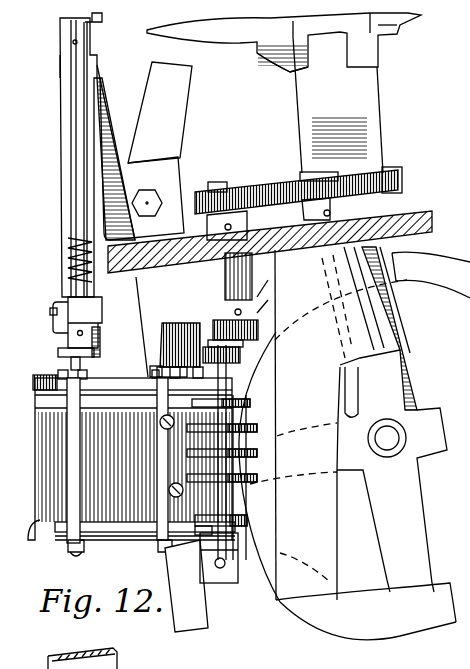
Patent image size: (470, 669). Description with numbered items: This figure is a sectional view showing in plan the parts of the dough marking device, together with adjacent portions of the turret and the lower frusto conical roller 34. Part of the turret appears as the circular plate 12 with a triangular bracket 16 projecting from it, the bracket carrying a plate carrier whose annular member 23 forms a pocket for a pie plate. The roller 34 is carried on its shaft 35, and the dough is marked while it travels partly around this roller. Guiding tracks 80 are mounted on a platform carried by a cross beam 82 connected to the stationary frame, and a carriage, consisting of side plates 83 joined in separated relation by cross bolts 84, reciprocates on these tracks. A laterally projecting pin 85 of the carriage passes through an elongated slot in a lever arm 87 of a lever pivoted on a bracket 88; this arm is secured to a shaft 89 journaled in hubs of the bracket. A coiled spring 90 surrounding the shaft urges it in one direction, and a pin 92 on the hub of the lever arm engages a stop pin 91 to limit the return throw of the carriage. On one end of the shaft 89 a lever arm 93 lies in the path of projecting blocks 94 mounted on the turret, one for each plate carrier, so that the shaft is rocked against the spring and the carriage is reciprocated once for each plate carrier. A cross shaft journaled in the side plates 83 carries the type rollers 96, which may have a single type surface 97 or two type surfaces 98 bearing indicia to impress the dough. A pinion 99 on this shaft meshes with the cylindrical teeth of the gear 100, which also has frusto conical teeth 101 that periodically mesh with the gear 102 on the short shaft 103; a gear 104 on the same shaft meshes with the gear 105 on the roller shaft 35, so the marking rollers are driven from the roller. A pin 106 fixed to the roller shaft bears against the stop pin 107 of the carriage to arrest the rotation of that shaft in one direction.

The circular plate 12 is at (284, 42).
The triangular bracket 16 is at (338, 105).
The annular member 23 is at (358, 636).
The lower frusto conical roller 34 is at (343, 424).
The shaft 35 is at (323, 171).
The guiding tracks 80 is at (34, 523).
The cross beam 82 is at (144, 219).
The side plates 83 is at (60, 387).
The cross bolts 84 is at (160, 468).
The pin 85 is at (68, 362).
The lever arm 87 is at (99, 328).
The bracket 88 is at (461, 472).
The shaft 89 is at (64, 201).
The coiled spring 90 is at (67, 262).
The stop pin 91 is at (55, 304).
The pin 92 is at (50, 314).
The lever arm 93 is at (98, 23).
The projecting blocks 94 is at (328, 52).
The type rollers 96 is at (252, 404).
The type surface 97 is at (464, 76).
The type surfaces 98 is at (463, 371).
The pinion 99 is at (240, 362).
The gear 100 is at (155, 357).
The frusto conical teeth 101 is at (162, 336).
The gear 102 is at (216, 331).
The short shaft 103 is at (216, 182).
The gear 104 is at (242, 187).
The gear 105 is at (402, 188).
The pin 106 is at (246, 524).
The stop pin 107 is at (196, 528).